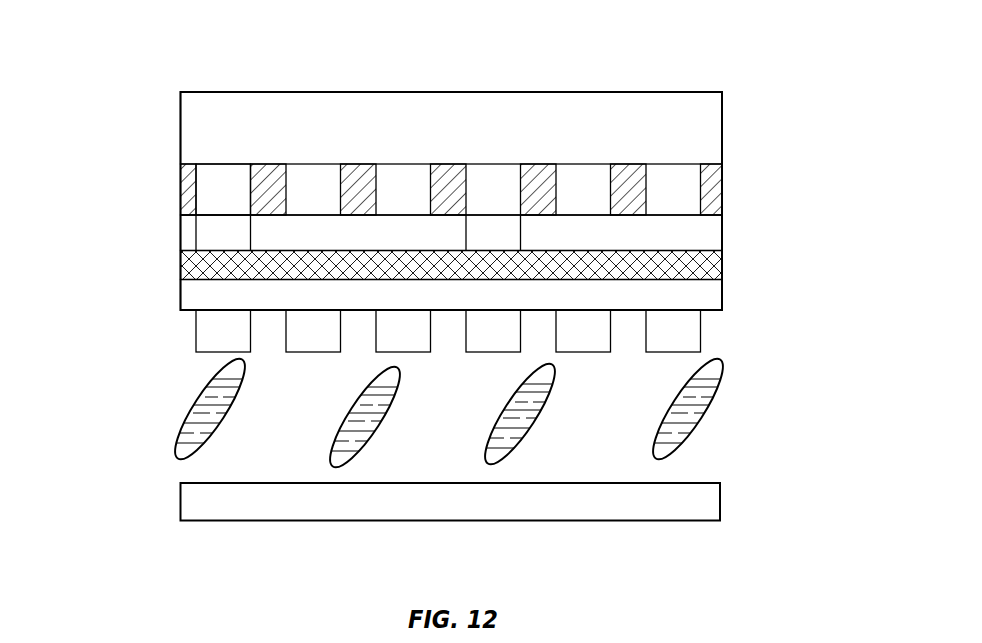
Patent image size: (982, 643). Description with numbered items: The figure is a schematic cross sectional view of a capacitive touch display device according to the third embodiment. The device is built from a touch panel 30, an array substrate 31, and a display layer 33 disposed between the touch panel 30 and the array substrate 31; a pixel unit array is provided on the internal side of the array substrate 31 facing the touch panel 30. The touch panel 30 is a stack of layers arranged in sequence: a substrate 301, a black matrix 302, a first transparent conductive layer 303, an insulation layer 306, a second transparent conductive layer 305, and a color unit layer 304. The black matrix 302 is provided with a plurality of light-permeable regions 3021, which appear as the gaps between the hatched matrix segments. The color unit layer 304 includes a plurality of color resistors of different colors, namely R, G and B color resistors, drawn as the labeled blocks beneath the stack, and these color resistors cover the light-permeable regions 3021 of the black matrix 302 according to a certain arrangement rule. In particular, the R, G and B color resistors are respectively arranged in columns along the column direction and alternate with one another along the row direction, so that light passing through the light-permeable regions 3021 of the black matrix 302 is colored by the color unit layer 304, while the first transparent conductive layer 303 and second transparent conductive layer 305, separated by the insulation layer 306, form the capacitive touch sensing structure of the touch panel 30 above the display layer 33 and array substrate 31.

The touch panel 30 is at (131, 75).
The substrate 301 is at (722, 130).
The black matrix 302 is at (722, 190).
The light-permeable regions 3021 is at (230, 187).
The first transparent conductive layer 303 is at (722, 237).
The second transparent conductive layer 305 is at (722, 281).
The insulation layer 306 is at (722, 302).
The color unit layer 304 is at (700, 332).
The display layer 33 is at (130, 322).
The array substrate 31 is at (180, 521).